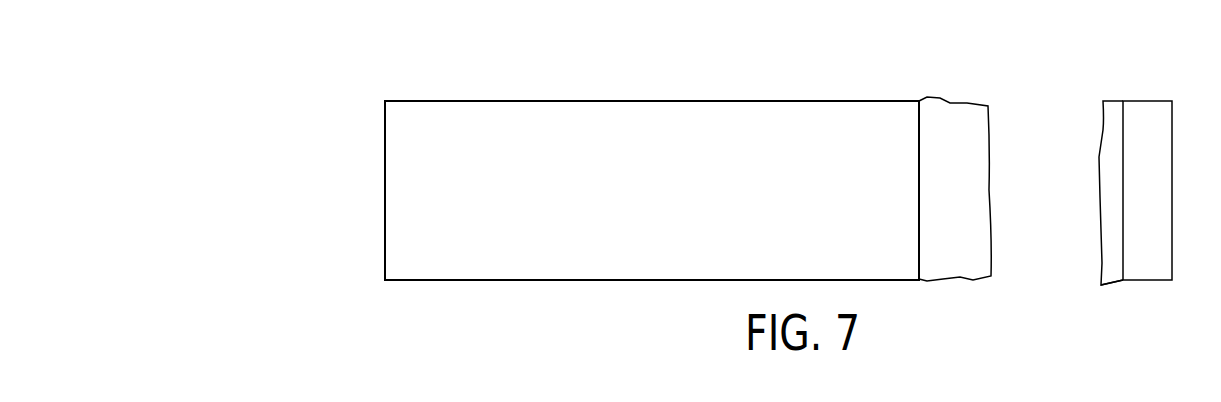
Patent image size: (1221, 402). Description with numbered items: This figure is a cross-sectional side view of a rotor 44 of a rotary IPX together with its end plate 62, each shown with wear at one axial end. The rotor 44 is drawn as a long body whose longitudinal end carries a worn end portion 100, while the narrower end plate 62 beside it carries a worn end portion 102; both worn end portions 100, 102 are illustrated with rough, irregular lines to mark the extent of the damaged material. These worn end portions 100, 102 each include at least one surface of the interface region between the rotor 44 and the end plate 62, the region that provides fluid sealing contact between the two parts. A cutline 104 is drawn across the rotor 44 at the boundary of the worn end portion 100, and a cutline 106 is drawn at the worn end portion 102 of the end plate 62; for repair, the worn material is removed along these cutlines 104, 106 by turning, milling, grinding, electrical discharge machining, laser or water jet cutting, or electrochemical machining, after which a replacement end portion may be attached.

The rotor 44 is at (632, 107).
The worn end portion 100 is at (958, 113).
The worn end portion 102 is at (1113, 110).
The cutline 104 is at (918, 122).
The cutline 106 is at (1123, 260).
The end plate 62 is at (1145, 112).